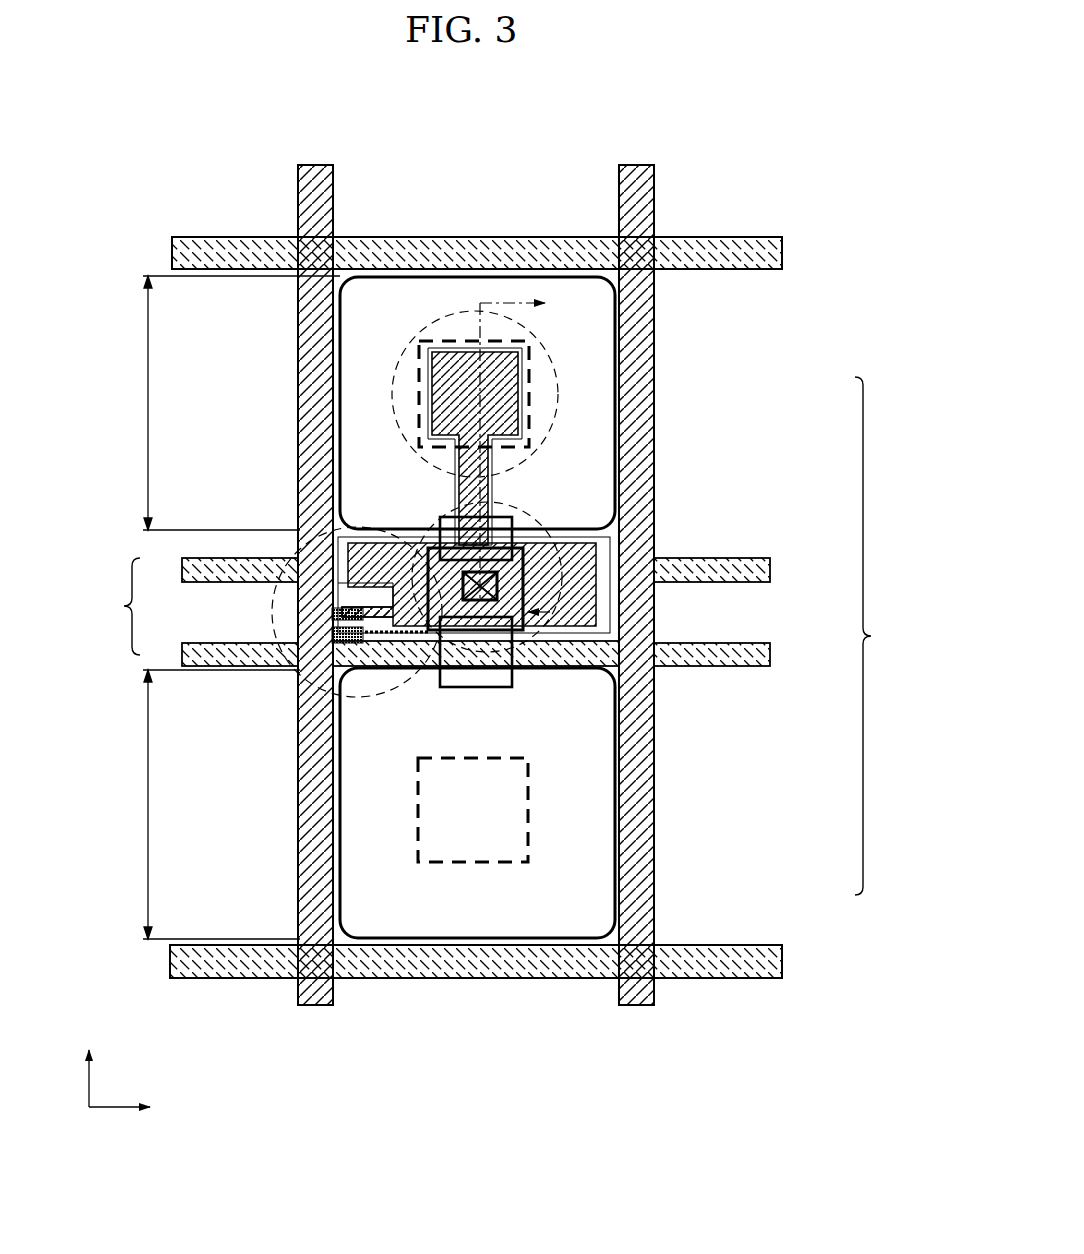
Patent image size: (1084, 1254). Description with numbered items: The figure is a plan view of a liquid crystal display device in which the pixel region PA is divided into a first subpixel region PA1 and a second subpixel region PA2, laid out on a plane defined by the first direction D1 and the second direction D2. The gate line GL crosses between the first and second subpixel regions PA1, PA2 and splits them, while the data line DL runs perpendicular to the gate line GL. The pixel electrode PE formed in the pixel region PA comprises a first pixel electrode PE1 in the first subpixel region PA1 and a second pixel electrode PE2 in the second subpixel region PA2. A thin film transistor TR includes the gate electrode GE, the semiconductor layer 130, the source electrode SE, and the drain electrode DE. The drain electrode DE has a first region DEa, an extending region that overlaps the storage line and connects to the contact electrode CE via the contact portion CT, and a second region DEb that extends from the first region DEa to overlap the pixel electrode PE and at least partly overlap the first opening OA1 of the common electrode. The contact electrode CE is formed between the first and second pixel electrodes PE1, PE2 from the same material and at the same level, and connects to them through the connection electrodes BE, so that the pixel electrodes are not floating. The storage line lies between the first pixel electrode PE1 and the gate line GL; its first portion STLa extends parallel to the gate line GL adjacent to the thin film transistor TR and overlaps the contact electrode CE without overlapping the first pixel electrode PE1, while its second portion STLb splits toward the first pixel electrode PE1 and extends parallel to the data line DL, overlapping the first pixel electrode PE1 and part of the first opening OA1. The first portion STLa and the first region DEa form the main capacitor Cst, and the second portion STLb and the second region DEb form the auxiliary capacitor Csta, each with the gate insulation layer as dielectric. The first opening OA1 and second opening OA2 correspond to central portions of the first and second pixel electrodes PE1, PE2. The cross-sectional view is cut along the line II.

The pixel region PA is at (496, 81).
The first subpixel region PA1 is at (218, 403).
The second subpixel region PA2 is at (198, 804).
The data line DL is at (307, 408).
The gate line GL is at (706, 667).
The first portion of the storage line STLa is at (736, 565).
The second portion of the storage line STLb is at (515, 422).
The first pixel electrode PE1 is at (603, 385).
The second pixel electrode PE2 is at (600, 888).
The pixel electrode PE is at (855, 252).
The first opening OA1 is at (531, 365).
The second opening OA2 is at (529, 820).
The first region of the drain electrode DEa is at (523, 553).
The second region of the drain electrode DEb is at (505, 402).
The drain electrode DE is at (370, 632).
The connection electrode BE is at (513, 512).
The contact portion CT is at (500, 572).
The contact electrode CE is at (527, 572).
The auxiliary capacitor Csta is at (457, 348).
The main capacitor Cst is at (438, 520).
The thin film transistor TR is at (268, 612).
The gate electrode GE is at (340, 567).
The source electrode SE is at (345, 600).
The semiconductor layer 130 is at (335, 622).
The line II-II' II is at (531, 459).
The first direction D1 is at (139, 1108).
The second direction D2 is at (92, 1061).